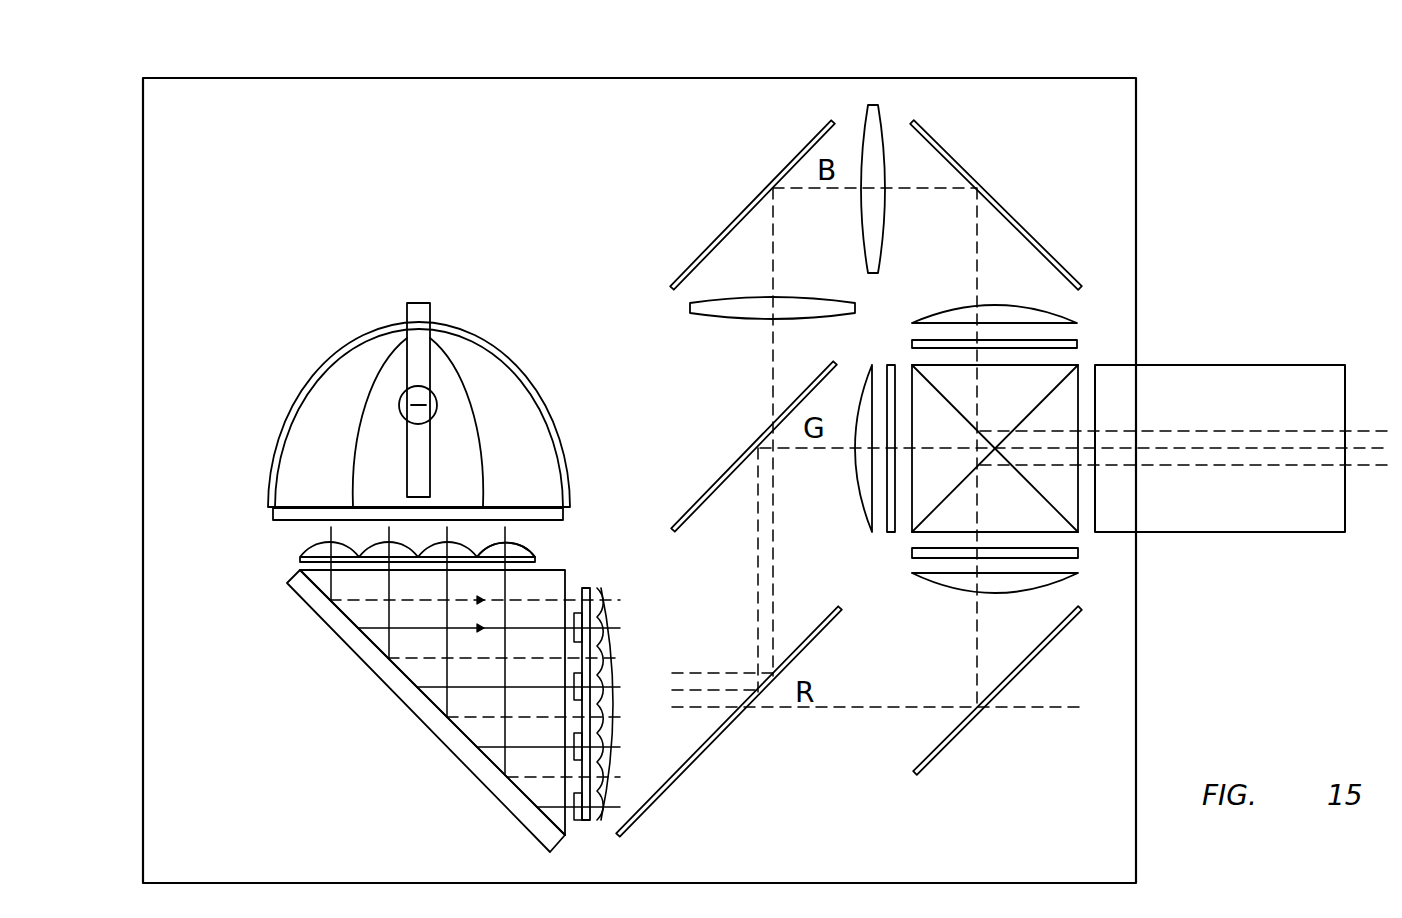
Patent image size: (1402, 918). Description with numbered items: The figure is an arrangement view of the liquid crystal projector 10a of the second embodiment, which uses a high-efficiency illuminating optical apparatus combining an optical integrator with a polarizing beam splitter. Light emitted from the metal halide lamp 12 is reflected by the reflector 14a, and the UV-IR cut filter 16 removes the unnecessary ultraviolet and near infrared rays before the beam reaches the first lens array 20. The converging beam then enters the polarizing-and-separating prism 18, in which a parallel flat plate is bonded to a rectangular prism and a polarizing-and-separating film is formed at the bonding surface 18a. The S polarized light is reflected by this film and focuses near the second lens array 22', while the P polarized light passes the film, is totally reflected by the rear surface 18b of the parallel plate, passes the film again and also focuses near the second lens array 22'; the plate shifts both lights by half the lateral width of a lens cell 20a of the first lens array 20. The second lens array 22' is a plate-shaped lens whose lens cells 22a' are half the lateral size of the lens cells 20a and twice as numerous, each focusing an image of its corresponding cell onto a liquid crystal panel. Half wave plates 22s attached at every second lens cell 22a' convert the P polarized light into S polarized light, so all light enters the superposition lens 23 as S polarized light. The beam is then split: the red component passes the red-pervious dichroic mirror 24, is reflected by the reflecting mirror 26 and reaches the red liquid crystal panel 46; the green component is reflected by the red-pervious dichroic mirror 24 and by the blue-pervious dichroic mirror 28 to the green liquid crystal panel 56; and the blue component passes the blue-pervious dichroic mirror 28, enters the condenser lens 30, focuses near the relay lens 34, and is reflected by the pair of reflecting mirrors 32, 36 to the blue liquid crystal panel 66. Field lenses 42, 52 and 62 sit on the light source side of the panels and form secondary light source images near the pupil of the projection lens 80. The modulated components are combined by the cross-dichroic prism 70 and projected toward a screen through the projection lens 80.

The liquid crystal projector 10a is at (1183, 138).
The metal halide lamp 12 is at (438, 407).
The reflector 14a is at (492, 353).
The UV-IR cut filter 16 is at (273, 518).
The polarizing-and-separating prism 18 is at (357, 665).
The bonding surface 18a is at (355, 640).
The rear surface of the parallel plate 18b is at (408, 710).
The first lens array 20 is at (300, 550).
The lens cell 20a is at (523, 550).
The second lens array 22' is at (606, 670).
The half wave plates 22s is at (580, 825).
The lens cell 22a' is at (654, 732).
The superposition lens 23 is at (603, 594).
The red-pervious dichroic mirror 24 is at (710, 748).
The reflecting mirror 26 is at (945, 750).
The blue-pervious dichroic mirror 28 is at (703, 498).
The condenser lens 30 is at (690, 303).
The reflecting mirror 32 is at (685, 272).
The relay lens 34 is at (880, 120).
The reflecting mirror 36 is at (953, 163).
The red field lens 42 is at (1067, 575).
The red liquid crystal panel 46 is at (1060, 553).
The green field lens 52 is at (865, 515).
The green liquid crystal panel 56 is at (891, 535).
The blue field lens 62 is at (1073, 316).
The blue liquid crystal panel 66 is at (1080, 345).
The cross-dichroic prism 70 is at (1057, 525).
The projection lens 80 is at (1258, 365).